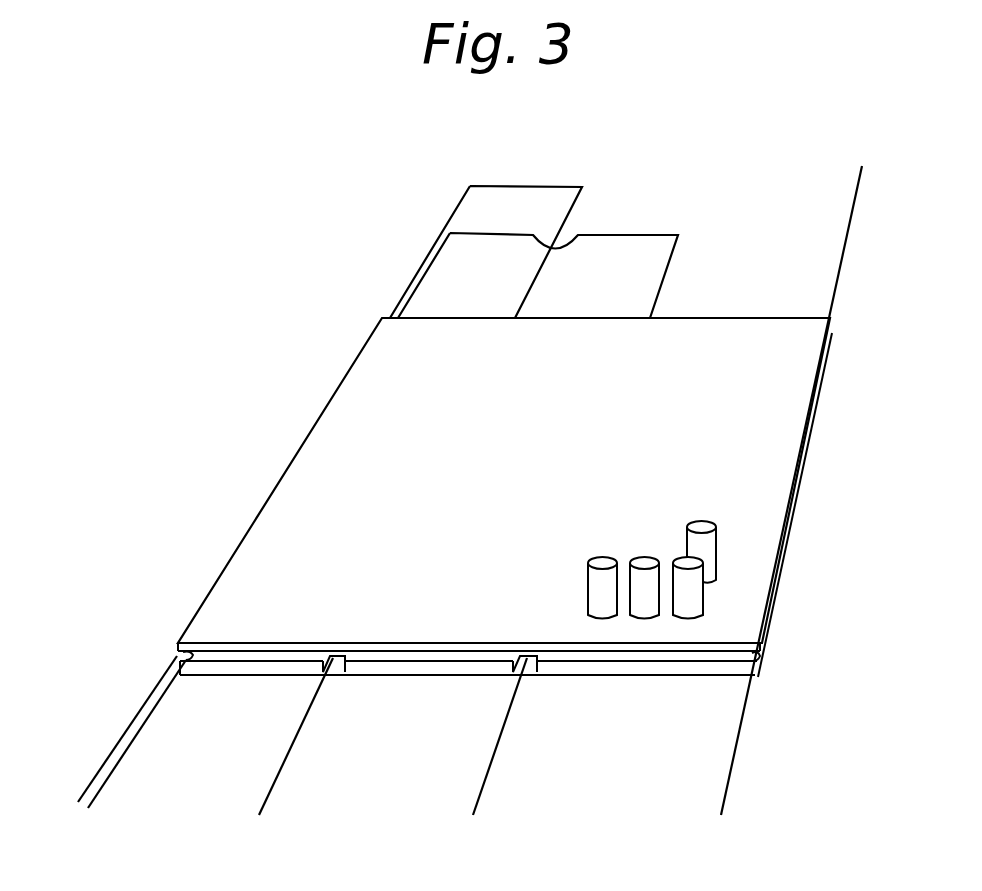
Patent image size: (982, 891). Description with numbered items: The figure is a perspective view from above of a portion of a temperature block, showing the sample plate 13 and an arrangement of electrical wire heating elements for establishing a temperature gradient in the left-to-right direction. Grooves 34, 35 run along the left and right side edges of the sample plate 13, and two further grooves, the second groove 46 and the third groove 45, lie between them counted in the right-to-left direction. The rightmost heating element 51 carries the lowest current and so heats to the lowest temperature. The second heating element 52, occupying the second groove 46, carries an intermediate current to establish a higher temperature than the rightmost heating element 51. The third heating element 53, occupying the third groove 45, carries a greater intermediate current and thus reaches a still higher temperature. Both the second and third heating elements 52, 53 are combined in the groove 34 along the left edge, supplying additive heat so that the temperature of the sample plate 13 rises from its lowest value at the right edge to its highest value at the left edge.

The sample plate 13 is at (203, 343).
The groove 34 is at (177, 657).
The groove 35 is at (757, 657).
The third groove 45 is at (337, 672).
The second groove 46 is at (527, 672).
The rightmost heating element 51 is at (733, 770).
The second heating element 52 is at (135, 742).
The third heating element 53 is at (120, 743).